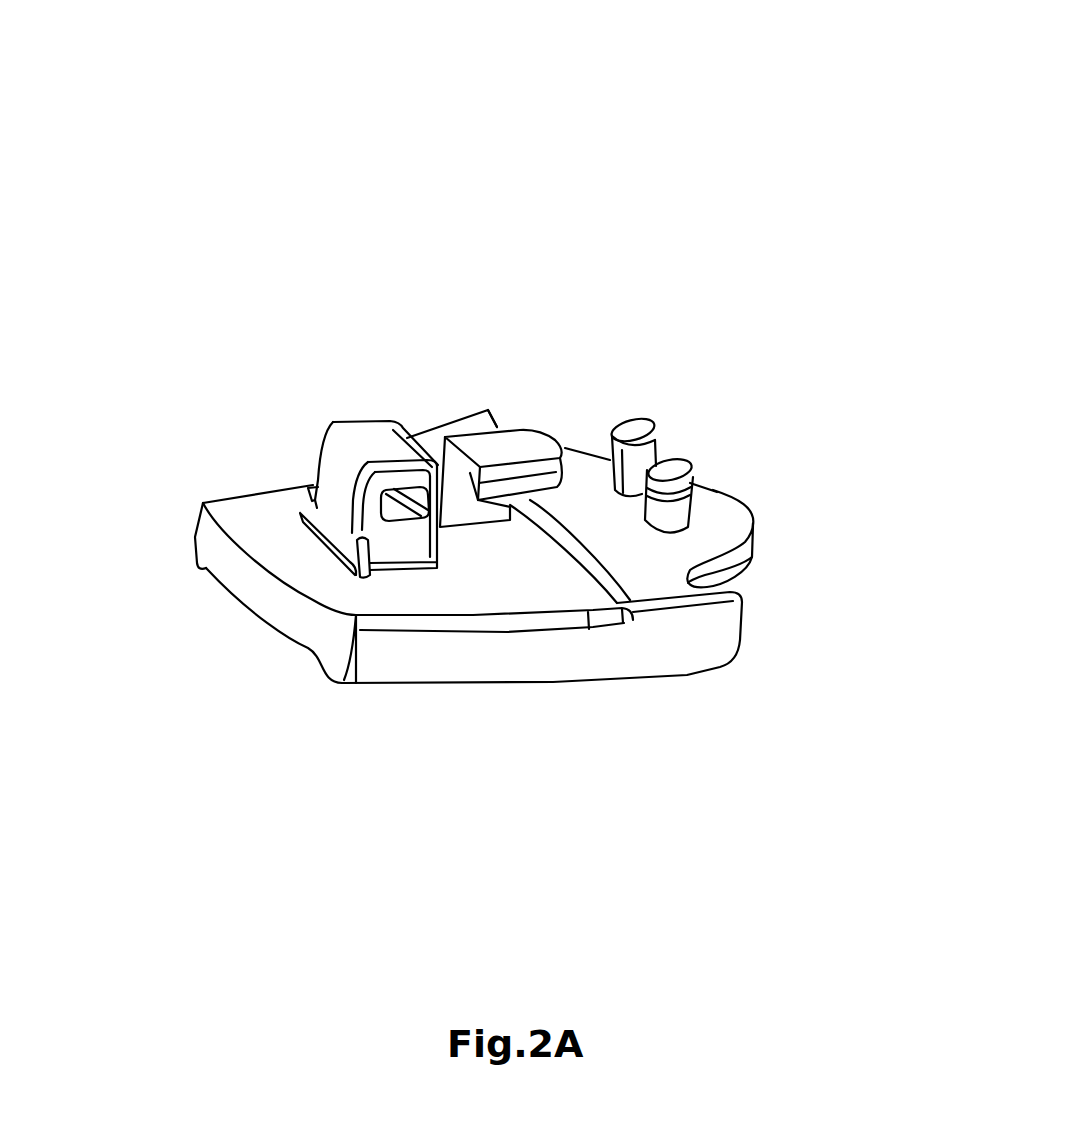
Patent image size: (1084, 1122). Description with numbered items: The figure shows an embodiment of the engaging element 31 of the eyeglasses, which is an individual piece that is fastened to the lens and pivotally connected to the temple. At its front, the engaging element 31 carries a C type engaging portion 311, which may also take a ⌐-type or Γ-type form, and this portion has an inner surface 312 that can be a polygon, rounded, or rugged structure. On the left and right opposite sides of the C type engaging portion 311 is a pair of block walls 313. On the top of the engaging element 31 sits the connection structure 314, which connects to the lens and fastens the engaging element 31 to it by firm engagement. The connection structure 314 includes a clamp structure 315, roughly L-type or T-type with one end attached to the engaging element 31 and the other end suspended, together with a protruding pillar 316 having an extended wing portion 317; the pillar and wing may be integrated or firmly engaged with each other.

The engaging element 31 is at (86, 119).
The C type engaging portion 311 is at (333, 435).
The inner surface 312 is at (410, 515).
The block wall 313 is at (357, 575).
The connection structure 314 is at (705, 180).
The clamp structure 315 is at (530, 448).
The protruding pillar 316 is at (638, 432).
The wing portion 317 is at (686, 464).